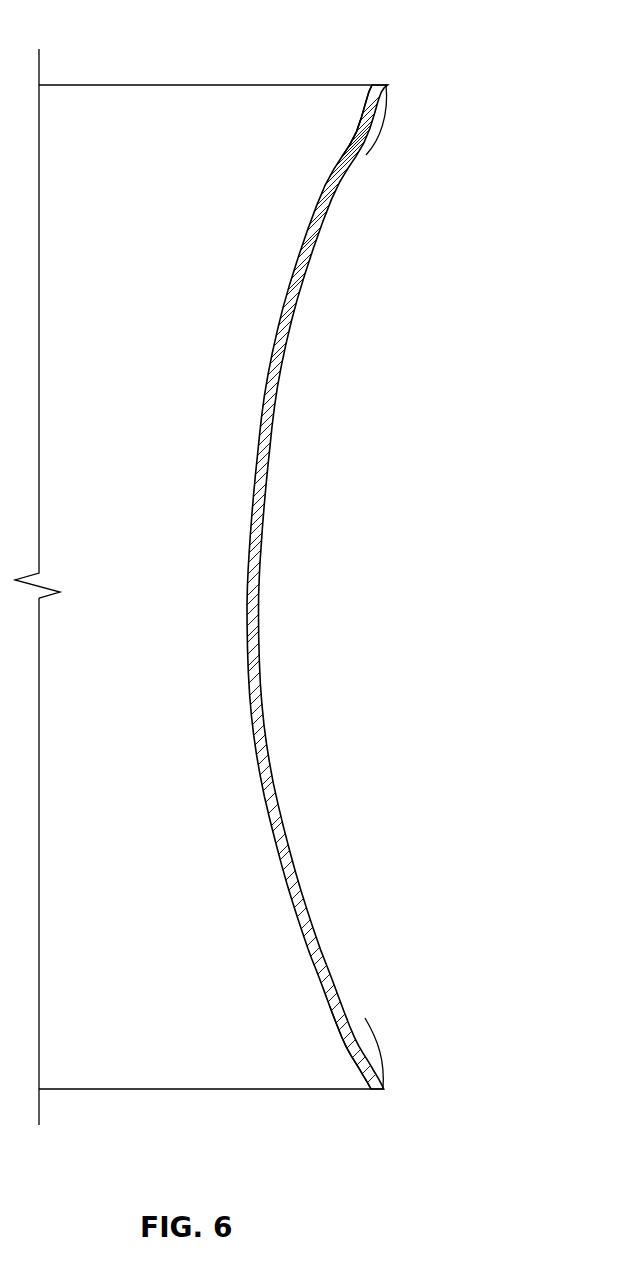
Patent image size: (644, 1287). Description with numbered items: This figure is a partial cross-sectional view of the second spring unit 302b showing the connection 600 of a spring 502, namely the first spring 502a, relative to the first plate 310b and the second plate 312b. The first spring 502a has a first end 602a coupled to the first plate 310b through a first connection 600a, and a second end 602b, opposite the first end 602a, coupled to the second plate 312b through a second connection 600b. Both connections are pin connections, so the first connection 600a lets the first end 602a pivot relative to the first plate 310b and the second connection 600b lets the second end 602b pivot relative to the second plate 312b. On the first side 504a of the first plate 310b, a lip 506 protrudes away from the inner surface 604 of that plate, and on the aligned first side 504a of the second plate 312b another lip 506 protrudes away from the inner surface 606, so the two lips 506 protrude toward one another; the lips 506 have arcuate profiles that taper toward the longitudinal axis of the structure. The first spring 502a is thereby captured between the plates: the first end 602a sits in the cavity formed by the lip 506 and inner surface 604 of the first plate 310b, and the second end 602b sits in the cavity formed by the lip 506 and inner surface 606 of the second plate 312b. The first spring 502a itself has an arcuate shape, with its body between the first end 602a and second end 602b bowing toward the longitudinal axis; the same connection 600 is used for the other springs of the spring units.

The second spring unit 302b is at (410, 61).
The first plate 310b is at (193, 84).
The second plate 312b is at (318, 1090).
The spring 502 is at (336, 587).
The first spring 502a is at (261, 523).
The first side 504a is at (387, 85).
The lip 506 is at (382, 127).
The connection 600 is at (407, 574).
The first connection 600a is at (360, 180).
The second connection 600b is at (407, 1006).
The first end 602a is at (352, 135).
The second end 602b is at (338, 1018).
The inner surface 604 is at (103, 85).
The inner surface 606 is at (83, 1089).